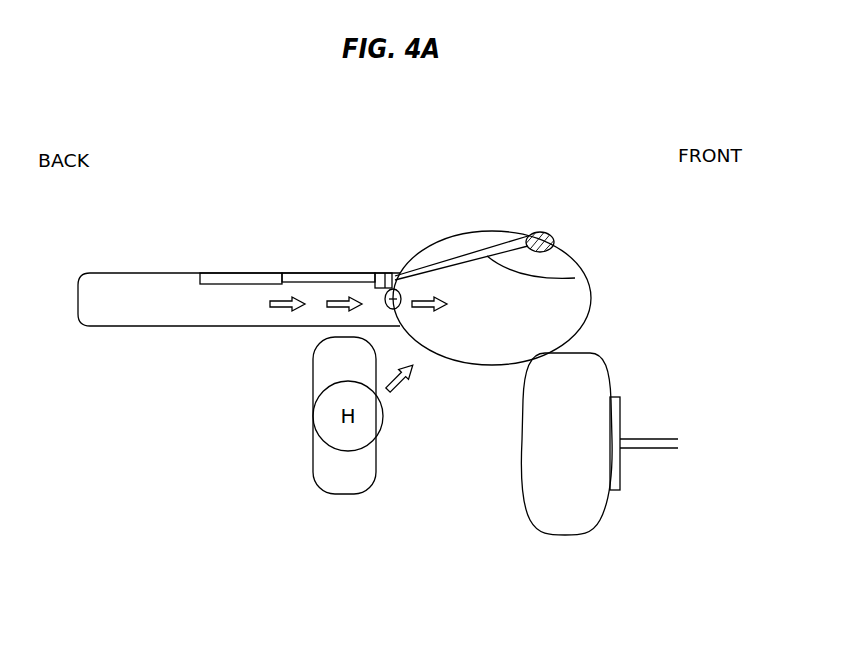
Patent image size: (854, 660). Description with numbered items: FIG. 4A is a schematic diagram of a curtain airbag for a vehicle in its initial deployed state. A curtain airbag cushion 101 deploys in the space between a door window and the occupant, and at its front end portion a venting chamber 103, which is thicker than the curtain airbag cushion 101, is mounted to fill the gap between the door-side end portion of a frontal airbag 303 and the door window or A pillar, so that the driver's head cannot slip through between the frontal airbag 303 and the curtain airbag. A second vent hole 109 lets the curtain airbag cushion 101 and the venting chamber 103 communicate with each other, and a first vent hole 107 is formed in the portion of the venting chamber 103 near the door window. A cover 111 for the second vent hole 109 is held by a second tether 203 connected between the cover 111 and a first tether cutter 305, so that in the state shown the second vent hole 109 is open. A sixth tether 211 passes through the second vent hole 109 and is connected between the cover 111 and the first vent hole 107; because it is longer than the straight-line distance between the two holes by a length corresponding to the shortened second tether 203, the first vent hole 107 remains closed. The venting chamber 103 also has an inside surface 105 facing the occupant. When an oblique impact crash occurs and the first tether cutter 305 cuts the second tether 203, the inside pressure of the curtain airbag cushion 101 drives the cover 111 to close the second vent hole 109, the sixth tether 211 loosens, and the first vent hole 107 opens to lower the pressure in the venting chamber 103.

The curtain airbag cushion 101 is at (113, 272).
The first tether cutter 305 is at (218, 275).
The second tether 203 is at (296, 277).
The cover 111 is at (382, 280).
The second vent hole 109 is at (393, 299).
The venting chamber 103 is at (457, 245).
The first vent hole 107 is at (540, 232).
The sixth tether 211 is at (575, 278).
The inside surface 105 is at (573, 338).
The frontal airbag 303 is at (568, 536).